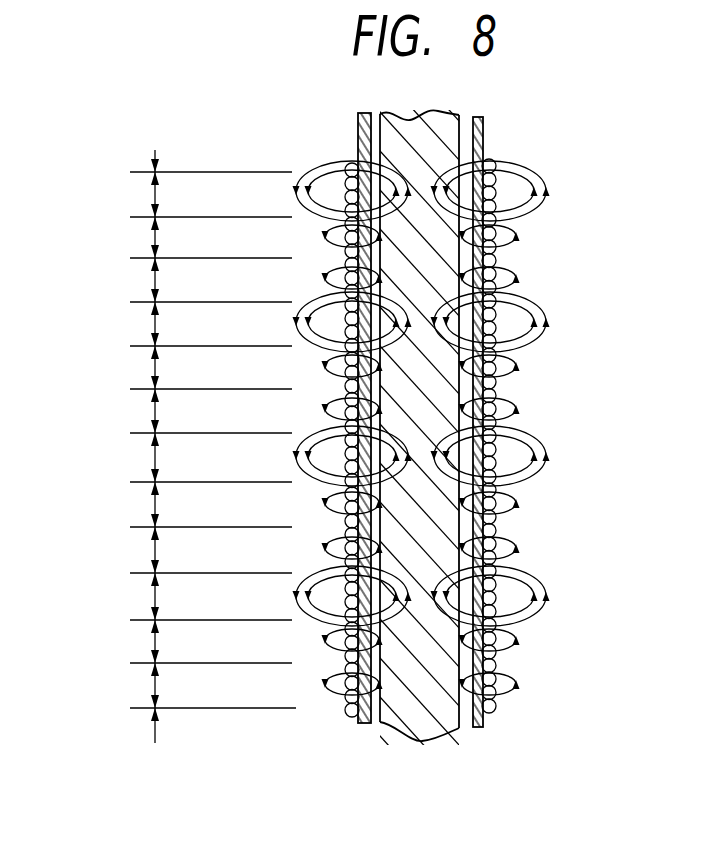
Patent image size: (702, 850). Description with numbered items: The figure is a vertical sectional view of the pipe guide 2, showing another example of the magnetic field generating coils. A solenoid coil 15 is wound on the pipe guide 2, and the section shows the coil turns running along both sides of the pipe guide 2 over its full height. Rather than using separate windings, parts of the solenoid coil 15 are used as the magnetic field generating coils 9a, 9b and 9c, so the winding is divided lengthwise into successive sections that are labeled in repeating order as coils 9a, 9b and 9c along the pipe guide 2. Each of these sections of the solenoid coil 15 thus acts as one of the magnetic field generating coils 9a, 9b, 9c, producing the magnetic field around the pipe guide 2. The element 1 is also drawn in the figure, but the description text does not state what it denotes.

The tube wall 1 is at (483, 126).
The pipe guide 2 is at (483, 145).
The solenoid coil 15 is at (490, 202).
The magnetic field generating coil 9a is at (155, 191).
The magnetic field generating coil 9b is at (155, 239).
The magnetic field generating coil 9c is at (155, 291).